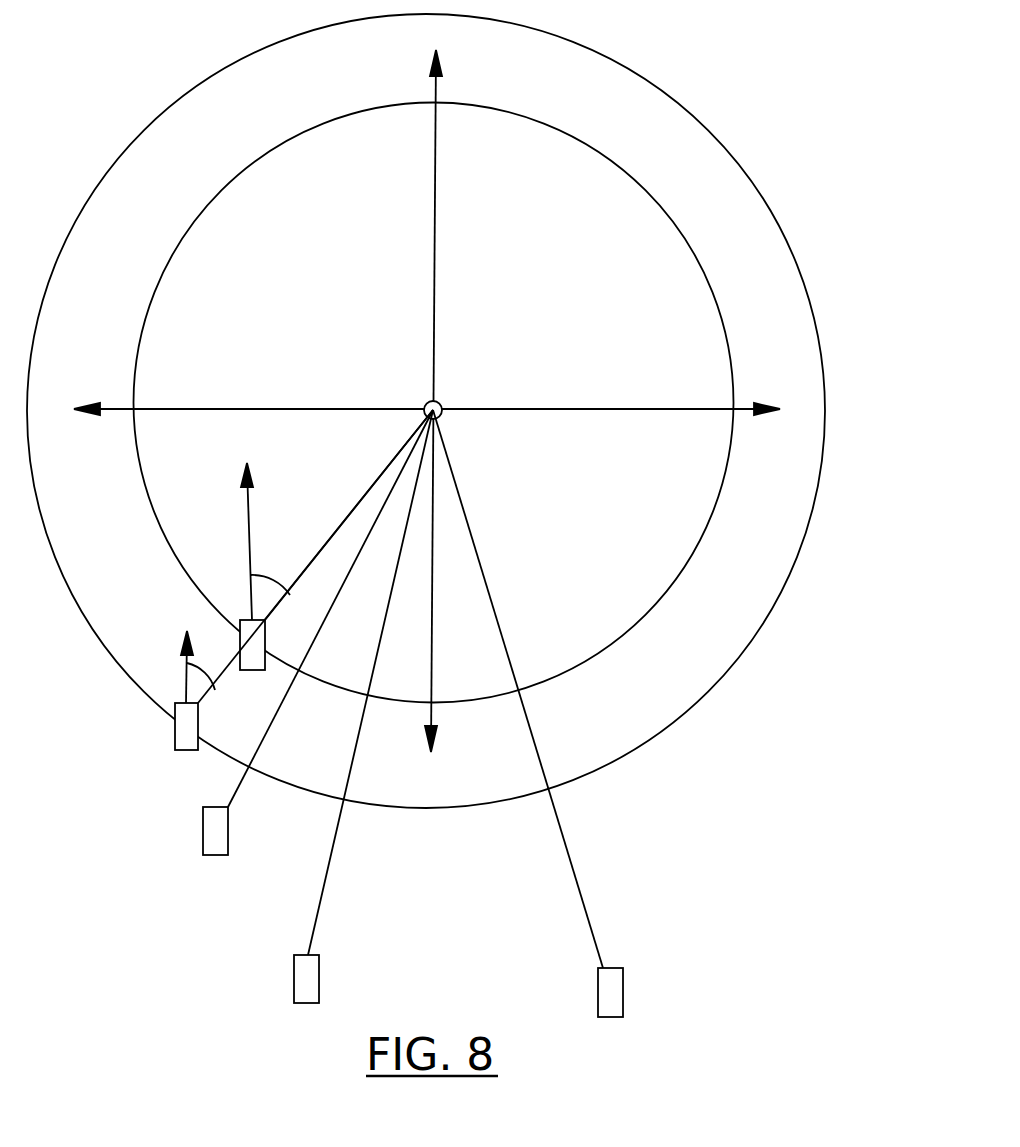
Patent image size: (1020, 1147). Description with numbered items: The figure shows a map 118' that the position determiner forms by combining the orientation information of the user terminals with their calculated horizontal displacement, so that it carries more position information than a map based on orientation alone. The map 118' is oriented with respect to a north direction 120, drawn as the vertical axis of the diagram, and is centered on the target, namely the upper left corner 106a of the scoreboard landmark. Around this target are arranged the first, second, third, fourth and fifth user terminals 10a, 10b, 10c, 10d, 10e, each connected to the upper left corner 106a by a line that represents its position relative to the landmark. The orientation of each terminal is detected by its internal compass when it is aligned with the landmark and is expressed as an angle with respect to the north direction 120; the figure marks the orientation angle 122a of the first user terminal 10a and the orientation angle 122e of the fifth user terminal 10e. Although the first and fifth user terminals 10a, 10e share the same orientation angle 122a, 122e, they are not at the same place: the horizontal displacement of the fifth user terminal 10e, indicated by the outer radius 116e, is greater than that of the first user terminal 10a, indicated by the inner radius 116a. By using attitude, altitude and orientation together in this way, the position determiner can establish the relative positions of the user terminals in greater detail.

The map 118' is at (795, 48).
The north direction 120 is at (435, 245).
The inner radius 116a is at (137, 353).
The outer radius 116e is at (55, 555).
The upper left corner 106a is at (439, 401).
The first user terminal 10a is at (265, 635).
The second user terminal 10b is at (203, 827).
The third user terminal 10c is at (294, 978).
The fourth user terminal 10d is at (620, 968).
The fifth user terminal 10e is at (175, 742).
The orientation angle 122a is at (263, 575).
The orientation angle 122e is at (199, 667).